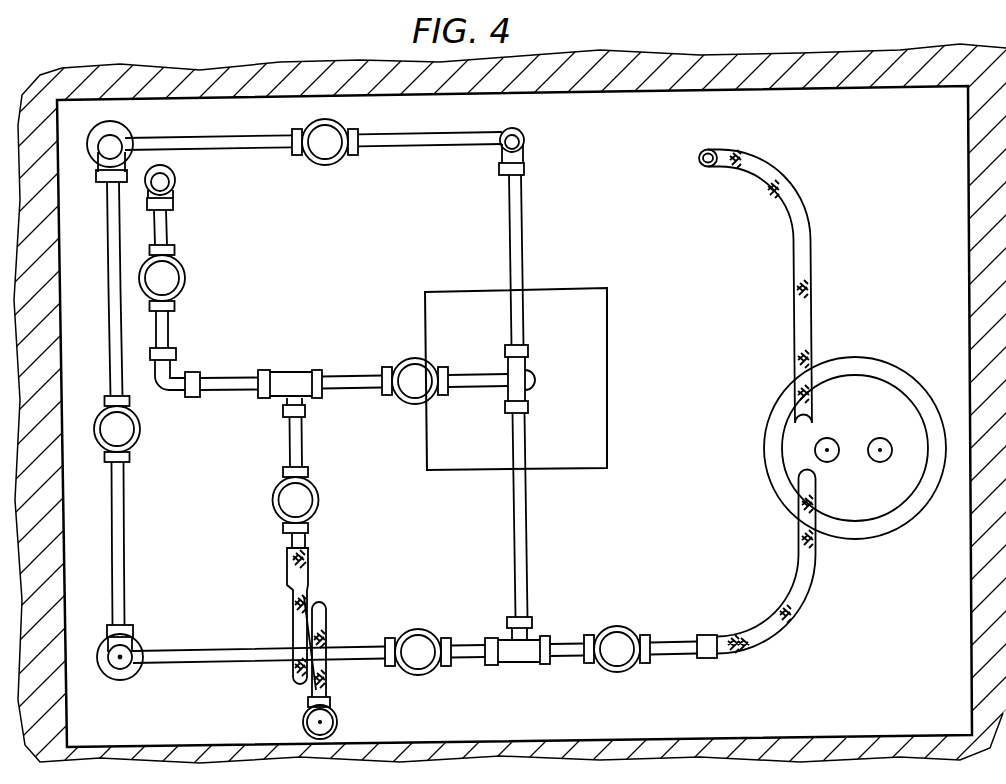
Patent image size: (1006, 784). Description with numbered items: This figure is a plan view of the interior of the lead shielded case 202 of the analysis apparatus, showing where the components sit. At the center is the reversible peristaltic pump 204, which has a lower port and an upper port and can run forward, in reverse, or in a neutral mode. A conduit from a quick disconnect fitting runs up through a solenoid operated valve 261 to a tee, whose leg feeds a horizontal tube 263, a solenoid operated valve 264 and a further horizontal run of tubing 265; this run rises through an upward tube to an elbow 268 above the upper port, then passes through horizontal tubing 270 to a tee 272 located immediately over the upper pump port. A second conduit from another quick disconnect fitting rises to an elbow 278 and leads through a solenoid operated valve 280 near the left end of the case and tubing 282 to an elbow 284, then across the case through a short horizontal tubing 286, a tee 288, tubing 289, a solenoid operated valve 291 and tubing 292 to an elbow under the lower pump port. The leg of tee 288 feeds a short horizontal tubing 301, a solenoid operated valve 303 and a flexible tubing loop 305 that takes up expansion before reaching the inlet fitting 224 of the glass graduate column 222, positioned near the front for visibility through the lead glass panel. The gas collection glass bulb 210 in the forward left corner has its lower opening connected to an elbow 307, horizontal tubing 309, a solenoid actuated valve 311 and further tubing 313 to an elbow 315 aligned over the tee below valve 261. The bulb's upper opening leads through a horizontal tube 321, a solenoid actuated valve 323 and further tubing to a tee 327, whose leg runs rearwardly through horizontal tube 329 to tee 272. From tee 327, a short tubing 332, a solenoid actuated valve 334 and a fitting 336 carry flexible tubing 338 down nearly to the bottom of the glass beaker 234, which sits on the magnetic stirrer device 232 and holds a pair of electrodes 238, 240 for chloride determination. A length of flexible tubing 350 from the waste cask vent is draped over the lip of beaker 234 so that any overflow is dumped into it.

The lead shielded case 202 is at (984, 62).
The reversible peristaltic pump 204 is at (608, 375).
The glass bulb 210 is at (133, 645).
The glass graduate column 222 is at (302, 718).
The inlet fitting 224 is at (331, 702).
The magnetic stirrer device 232 is at (915, 388).
The glass beaker 234 is at (862, 377).
The electrode 238 is at (838, 444).
The electrode 240 is at (888, 459).
The solenoid operated valve 261 is at (121, 126).
The horizontal tube 263 is at (250, 135).
The solenoid operated valve 264 is at (336, 119).
The horizontal run of tubing 265 is at (477, 128).
The second elbow 268 is at (524, 153).
The horizontal run of tubing 270 is at (523, 216).
The tee 272 is at (527, 353).
The elbow 278 is at (172, 190).
The solenoid operated valve 280 is at (187, 273).
The tubing 282 is at (169, 328).
The elbow 284 is at (181, 378).
The horizontal length of tubing 286 is at (223, 391).
The tee 288 is at (290, 368).
The tubing 289 is at (355, 374).
The solenoid operated valve 291 is at (407, 357).
The tubing 292 is at (475, 374).
The horizontal section of tubing 301 is at (303, 447).
The solenoid operated valve 303 is at (318, 497).
The flexible tubing loop 305 is at (309, 572).
The elbow 307 is at (125, 635).
The horizontal run of tubing 309 is at (127, 528).
The solenoid actuated valve 311 is at (135, 437).
The horizontal tubing 313 is at (107, 277).
The elbow 315 is at (108, 160).
The horizontal tube 321 is at (248, 645).
The solenoid actuated valve 323 is at (438, 671).
The tee 327 is at (531, 622).
The horizontal tube 329 is at (527, 512).
The tubing 332 is at (572, 659).
The solenoid actuated valve 334 is at (612, 626).
The fitting 336 is at (672, 640).
The flexible tubing 338 is at (780, 617).
The flexible tubing 350 is at (809, 287).